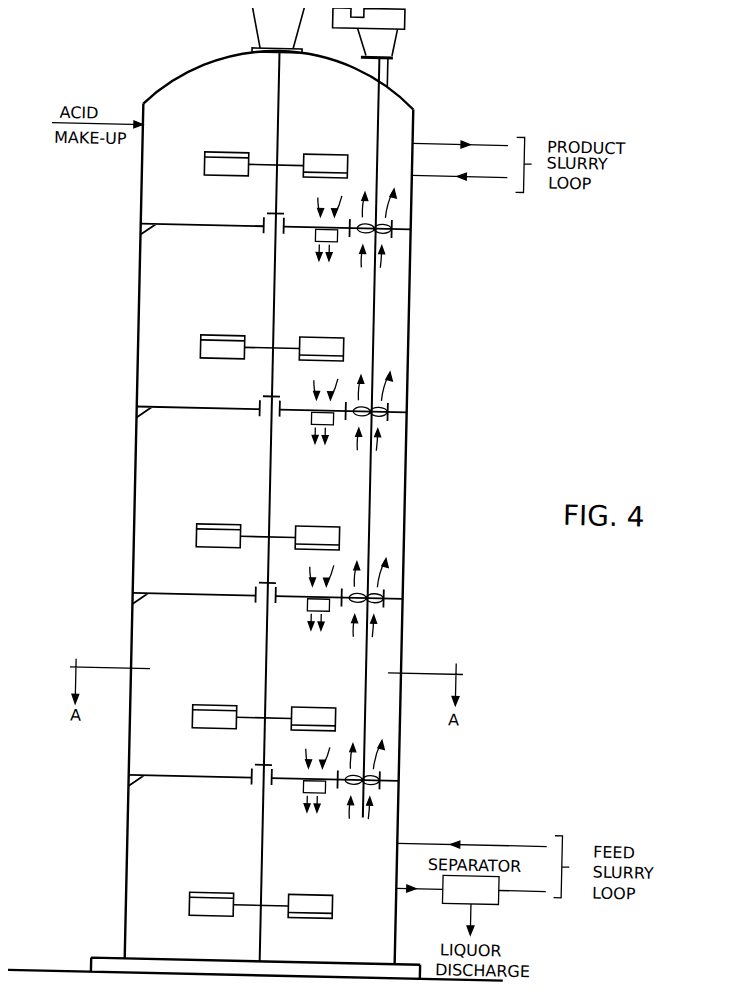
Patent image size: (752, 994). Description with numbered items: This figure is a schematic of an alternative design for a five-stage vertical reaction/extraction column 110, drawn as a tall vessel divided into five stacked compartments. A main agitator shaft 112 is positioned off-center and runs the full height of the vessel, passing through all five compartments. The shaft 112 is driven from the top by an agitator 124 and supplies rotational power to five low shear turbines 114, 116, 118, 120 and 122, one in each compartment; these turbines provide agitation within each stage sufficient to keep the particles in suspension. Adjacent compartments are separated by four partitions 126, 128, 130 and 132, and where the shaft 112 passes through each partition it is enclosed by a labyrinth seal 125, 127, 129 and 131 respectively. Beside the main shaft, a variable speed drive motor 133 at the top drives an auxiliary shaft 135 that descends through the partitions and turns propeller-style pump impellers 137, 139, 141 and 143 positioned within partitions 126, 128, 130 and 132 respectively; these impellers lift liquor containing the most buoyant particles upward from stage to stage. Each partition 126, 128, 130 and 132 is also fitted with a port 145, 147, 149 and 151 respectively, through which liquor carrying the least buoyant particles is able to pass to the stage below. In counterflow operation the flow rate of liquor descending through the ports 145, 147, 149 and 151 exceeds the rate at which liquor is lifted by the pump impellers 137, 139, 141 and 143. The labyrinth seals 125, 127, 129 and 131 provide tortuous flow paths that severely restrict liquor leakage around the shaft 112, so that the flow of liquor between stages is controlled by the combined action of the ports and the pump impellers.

The extraction column 110 is at (438, 346).
The main agitator shaft 112 is at (280, 493).
The low shear turbine 114 is at (208, 902).
The low shear turbine 116 is at (208, 722).
The low shear turbine 118 is at (208, 539).
The low shear turbine 120 is at (207, 343).
The low shear turbine 122 is at (207, 165).
The agitator 124 is at (262, 18).
The partition 126 is at (144, 793).
The partition 128 is at (144, 609).
The partition 130 is at (144, 424).
The partition 132 is at (144, 235).
The labyrinth seal 125 is at (272, 788).
The labyrinth seal 127 is at (271, 605).
The labyrinth seal 129 is at (270, 418).
The labyrinth seal 131 is at (271, 237).
The variable speed drive motor 133 is at (398, 18).
The auxiliary shaft 135 is at (380, 499).
The pump impeller 137 is at (394, 777).
The pump impeller 139 is at (397, 595).
The pump impeller 141 is at (388, 406).
The pump impeller 143 is at (389, 226).
The port 145 is at (320, 790).
The port 147 is at (320, 604).
The port 149 is at (320, 423).
The port 151 is at (320, 237).